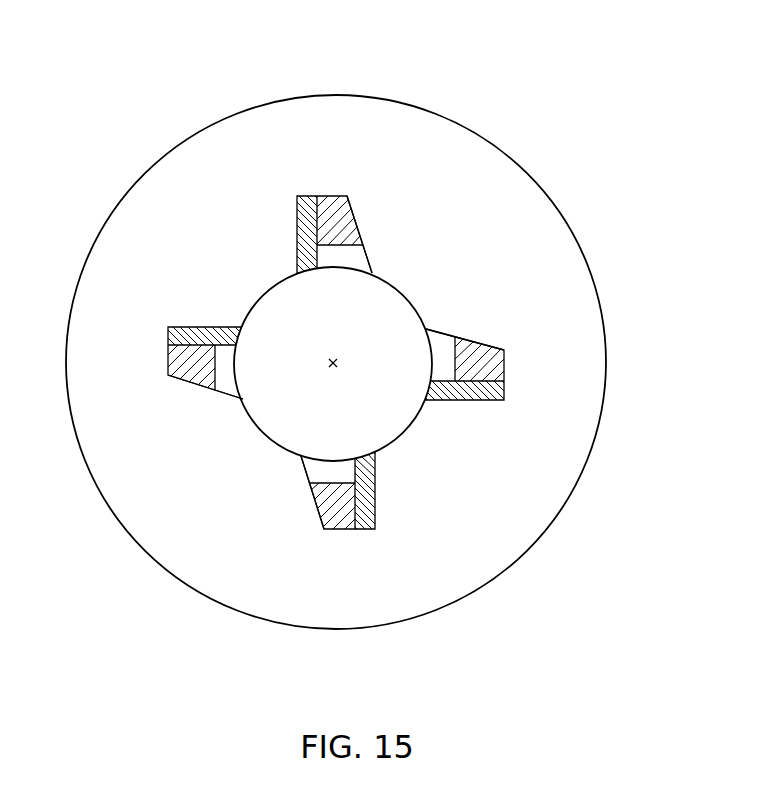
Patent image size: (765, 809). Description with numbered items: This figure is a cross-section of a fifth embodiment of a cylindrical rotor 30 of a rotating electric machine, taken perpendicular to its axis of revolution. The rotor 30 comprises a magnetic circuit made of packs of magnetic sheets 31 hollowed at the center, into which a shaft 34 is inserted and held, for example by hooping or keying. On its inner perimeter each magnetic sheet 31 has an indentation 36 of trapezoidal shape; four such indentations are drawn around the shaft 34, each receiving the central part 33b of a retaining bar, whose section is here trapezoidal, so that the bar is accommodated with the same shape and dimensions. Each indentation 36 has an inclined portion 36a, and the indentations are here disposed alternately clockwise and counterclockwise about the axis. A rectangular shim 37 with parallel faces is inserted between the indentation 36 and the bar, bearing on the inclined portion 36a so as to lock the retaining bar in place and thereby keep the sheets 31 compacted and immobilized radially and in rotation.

The rotor 30 is at (563, 68).
The magnetic sheets 31 is at (582, 375).
The central part of bar 33b is at (335, 196).
The shaft 34 is at (275, 412).
The indentation 36 is at (297, 250).
The inclined portion 36a is at (360, 233).
The shim 37 is at (297, 211).